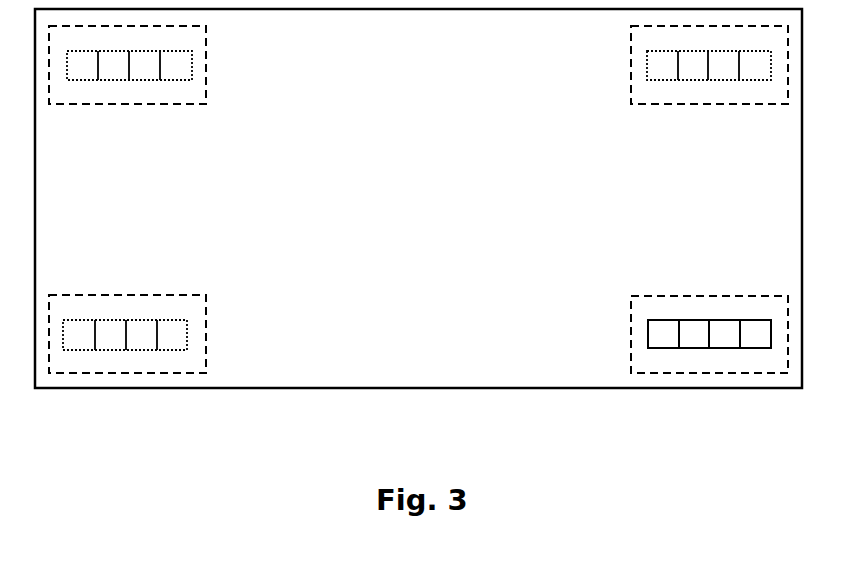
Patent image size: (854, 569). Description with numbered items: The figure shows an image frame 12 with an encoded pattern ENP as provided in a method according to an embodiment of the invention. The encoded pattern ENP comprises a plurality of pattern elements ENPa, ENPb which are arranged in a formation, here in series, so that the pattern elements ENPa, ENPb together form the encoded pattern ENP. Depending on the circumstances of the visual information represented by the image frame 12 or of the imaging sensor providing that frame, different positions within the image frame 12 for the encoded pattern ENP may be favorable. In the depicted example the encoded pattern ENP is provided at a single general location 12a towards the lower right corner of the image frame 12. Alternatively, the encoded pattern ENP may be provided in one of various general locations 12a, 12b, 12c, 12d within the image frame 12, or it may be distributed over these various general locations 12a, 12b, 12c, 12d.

The image frame 12 is at (235, 389).
The general location 12a is at (722, 295).
The general location 12b is at (206, 352).
The general location 12c is at (631, 65).
The general location 12d is at (206, 65).
The encoded pattern ENP is at (698, 315).
The pattern element ENPb is at (725, 350).
The pattern element ENPa is at (756, 350).